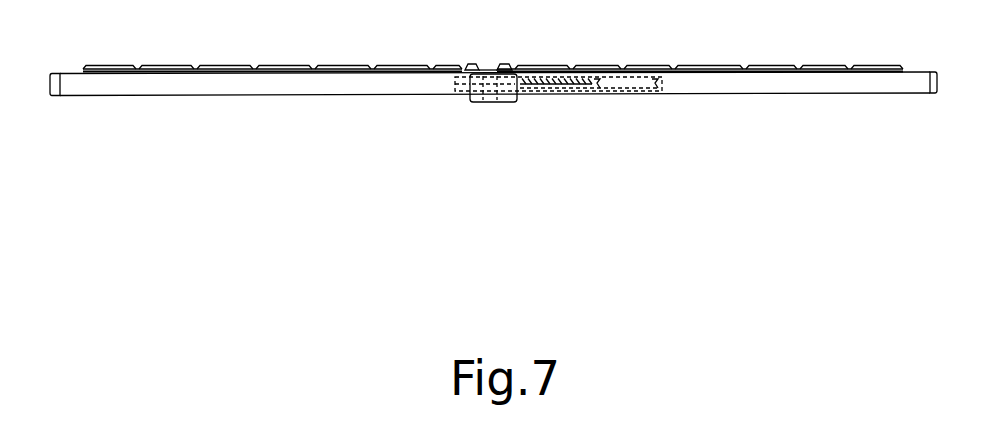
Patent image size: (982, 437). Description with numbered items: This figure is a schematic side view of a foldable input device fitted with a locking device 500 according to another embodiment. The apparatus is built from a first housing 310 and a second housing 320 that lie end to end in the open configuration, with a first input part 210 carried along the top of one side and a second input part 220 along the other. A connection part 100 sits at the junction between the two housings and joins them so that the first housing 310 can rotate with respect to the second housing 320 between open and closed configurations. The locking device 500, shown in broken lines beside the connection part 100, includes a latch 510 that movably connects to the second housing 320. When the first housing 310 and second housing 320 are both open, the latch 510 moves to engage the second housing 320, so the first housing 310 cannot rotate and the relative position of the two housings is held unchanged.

The connection part 100 is at (475, 95).
The first input part 210 is at (305, 68).
The second input part 220 is at (800, 68).
The first housing 310 is at (220, 87).
The second housing 320 is at (840, 85).
The locking device 500 is at (665, 85).
The latch 510 is at (518, 78).